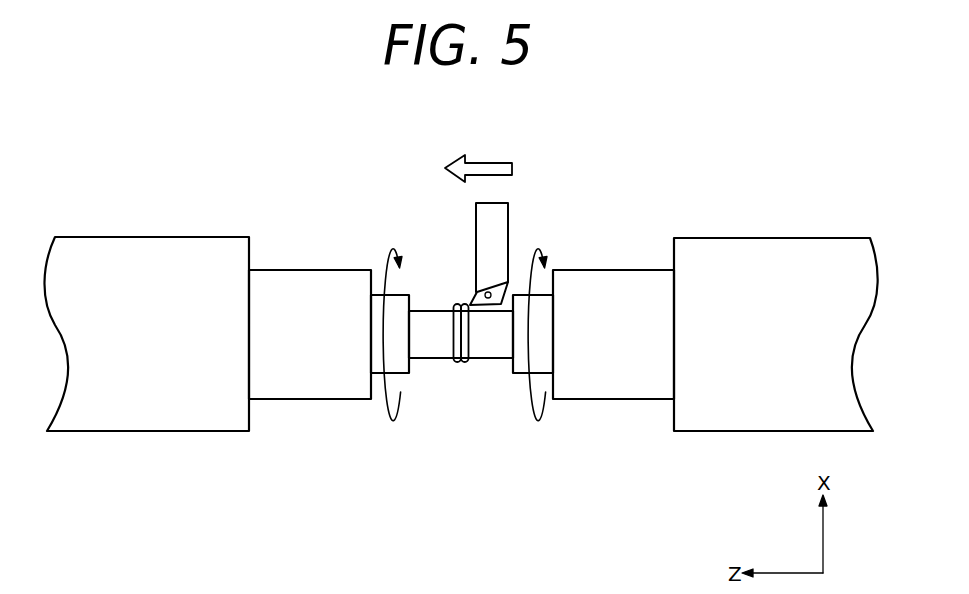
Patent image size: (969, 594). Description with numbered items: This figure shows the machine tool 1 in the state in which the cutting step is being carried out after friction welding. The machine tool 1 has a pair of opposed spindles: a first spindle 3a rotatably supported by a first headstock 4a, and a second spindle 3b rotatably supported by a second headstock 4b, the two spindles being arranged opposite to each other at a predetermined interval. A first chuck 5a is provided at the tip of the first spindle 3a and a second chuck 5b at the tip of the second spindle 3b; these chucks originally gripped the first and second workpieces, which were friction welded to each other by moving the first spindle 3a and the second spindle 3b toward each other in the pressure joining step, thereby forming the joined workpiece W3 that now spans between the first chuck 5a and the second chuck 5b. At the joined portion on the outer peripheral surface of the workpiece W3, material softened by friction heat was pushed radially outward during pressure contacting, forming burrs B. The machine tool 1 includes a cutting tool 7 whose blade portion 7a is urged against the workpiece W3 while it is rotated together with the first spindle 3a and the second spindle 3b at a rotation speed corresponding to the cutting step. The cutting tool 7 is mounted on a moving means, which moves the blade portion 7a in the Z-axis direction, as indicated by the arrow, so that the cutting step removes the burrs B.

The machine tool 1 is at (776, 118).
The first spindle 3a is at (307, 287).
The second spindle 3b is at (611, 287).
The first headstock 4a is at (211, 252).
The second headstock 4b is at (706, 252).
The first chuck 5a is at (396, 308).
The second chuck 5b is at (520, 306).
The cutting tool 7 is at (470, 212).
The blade portion 7a is at (470, 303).
The joined workpiece W3 is at (442, 362).
The burrs B is at (466, 362).